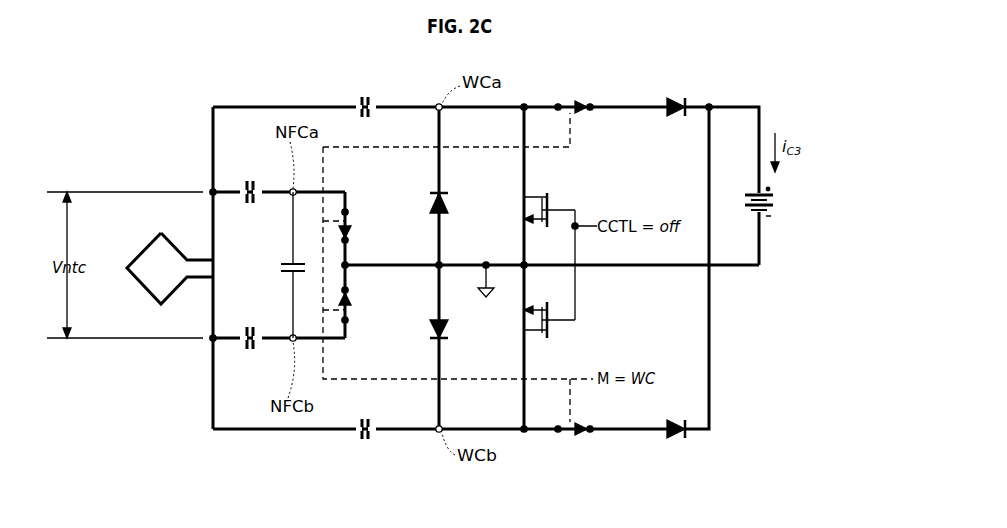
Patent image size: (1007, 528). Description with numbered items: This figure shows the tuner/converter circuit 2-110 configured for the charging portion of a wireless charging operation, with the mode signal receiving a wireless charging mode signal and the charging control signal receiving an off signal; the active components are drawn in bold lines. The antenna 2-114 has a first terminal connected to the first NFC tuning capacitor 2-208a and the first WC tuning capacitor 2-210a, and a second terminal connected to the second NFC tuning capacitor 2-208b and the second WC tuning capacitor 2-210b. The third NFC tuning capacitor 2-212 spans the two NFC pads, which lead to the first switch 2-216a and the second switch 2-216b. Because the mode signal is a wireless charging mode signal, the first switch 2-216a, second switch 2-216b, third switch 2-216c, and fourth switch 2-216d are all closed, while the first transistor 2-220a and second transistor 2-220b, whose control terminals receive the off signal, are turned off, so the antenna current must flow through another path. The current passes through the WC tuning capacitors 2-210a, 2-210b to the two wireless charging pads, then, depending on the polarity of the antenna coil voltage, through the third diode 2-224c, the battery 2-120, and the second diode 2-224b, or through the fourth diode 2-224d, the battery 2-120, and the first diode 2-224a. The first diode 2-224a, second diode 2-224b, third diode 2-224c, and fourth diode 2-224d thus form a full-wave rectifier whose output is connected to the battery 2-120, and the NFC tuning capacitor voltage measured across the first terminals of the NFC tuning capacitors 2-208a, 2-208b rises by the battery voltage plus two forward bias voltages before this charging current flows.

The circuit 2-110 is at (221, 92).
The antenna 2-114 is at (146, 248).
The first NFC tuning capacitor 2-208a is at (245, 186).
The second NFC tuning capacitor 2-208b is at (247, 344).
The third NFC tuning capacitor 2-212 is at (287, 262).
The first WC tuning capacitor 2-210a is at (360, 100).
The second WC tuning capacitor 2-210b is at (360, 437).
The first switch 2-216a is at (347, 232).
The second switch 2-216b is at (347, 304).
The third switch 2-216c is at (577, 102).
The fourth switch 2-216d is at (578, 434).
The first diode 2-224a is at (443, 197).
The second diode 2-224b is at (443, 338).
The third diode 2-224c is at (688, 102).
The fourth diode 2-224d is at (688, 433).
The first transistor 2-220a is at (550, 196).
The second transistor 2-220b is at (550, 334).
The battery 2-120 is at (775, 208).